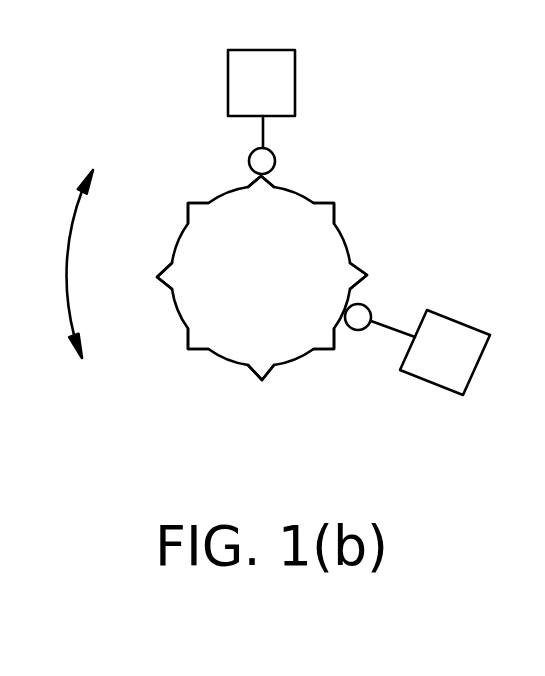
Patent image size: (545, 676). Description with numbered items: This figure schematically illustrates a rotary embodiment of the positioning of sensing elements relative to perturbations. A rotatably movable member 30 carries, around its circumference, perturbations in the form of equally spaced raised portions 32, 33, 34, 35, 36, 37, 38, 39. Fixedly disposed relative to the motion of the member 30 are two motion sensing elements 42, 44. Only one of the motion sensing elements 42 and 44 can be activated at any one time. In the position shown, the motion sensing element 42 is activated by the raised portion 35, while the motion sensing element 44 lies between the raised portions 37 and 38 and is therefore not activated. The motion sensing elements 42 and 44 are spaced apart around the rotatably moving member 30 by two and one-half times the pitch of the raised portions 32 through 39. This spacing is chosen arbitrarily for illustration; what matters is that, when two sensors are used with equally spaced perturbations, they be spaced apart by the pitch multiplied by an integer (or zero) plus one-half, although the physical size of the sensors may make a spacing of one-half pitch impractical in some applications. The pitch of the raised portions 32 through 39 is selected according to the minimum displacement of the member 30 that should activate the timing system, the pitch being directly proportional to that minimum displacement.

The rotatably movable member 30 is at (300, 257).
The raised portion 32 is at (188, 345).
The raised portion 33 is at (165, 292).
The raised portion 34 is at (192, 207).
The raised portion 35 is at (254, 186).
The raised portion 36 is at (325, 207).
The raised portion 37 is at (358, 268).
The raised portion 38 is at (328, 340).
The raised portion 39 is at (253, 370).
The motion sensing element 42 is at (280, 90).
The motion sensing element 44 is at (453, 338).